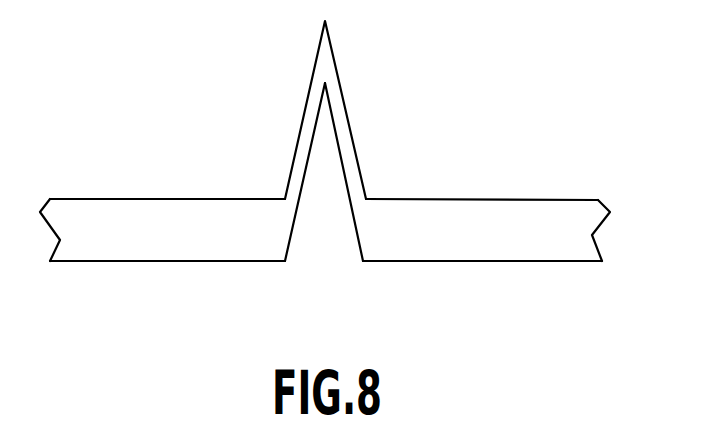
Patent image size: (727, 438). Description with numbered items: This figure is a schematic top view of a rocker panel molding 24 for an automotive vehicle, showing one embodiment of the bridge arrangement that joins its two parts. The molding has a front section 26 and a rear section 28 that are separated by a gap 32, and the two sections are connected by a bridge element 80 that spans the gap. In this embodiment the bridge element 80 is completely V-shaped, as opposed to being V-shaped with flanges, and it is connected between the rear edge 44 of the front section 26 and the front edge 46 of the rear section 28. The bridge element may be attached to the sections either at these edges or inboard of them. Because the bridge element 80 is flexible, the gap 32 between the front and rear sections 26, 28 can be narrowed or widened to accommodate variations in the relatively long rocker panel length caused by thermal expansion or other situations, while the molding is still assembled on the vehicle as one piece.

The rocker panel molding 24 is at (325, 202).
The front section 26 is at (171, 221).
The rear section 28 is at (522, 225).
The gap 32 is at (342, 269).
The rear edge of the front section 44 is at (293, 221).
The front edge of the rear section 46 is at (362, 243).
The bridge element 80 is at (342, 124).